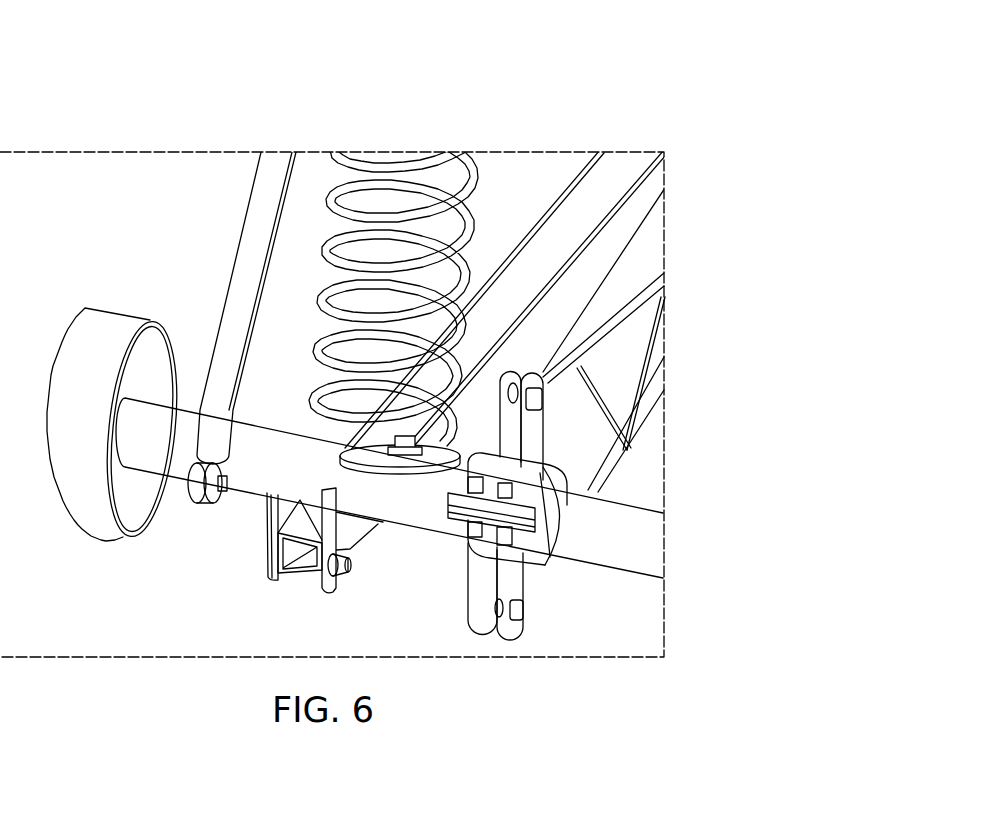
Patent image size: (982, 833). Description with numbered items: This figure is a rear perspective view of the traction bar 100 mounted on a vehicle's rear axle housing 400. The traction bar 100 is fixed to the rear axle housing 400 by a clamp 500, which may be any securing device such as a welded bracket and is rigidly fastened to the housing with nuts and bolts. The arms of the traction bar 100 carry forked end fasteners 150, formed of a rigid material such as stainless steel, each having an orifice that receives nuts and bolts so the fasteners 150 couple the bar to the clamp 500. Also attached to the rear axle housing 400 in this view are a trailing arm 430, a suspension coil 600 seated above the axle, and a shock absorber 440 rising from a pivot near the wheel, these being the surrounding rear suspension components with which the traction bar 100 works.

The traction bar 100 is at (543, 405).
The forked end fasteners 150 is at (516, 614).
The rear axle housing 400 is at (258, 468).
The trailing arms 430 is at (604, 178).
The shock absorbers 440 is at (253, 257).
The clamp 500 is at (485, 540).
The suspension coils 600 is at (415, 183).